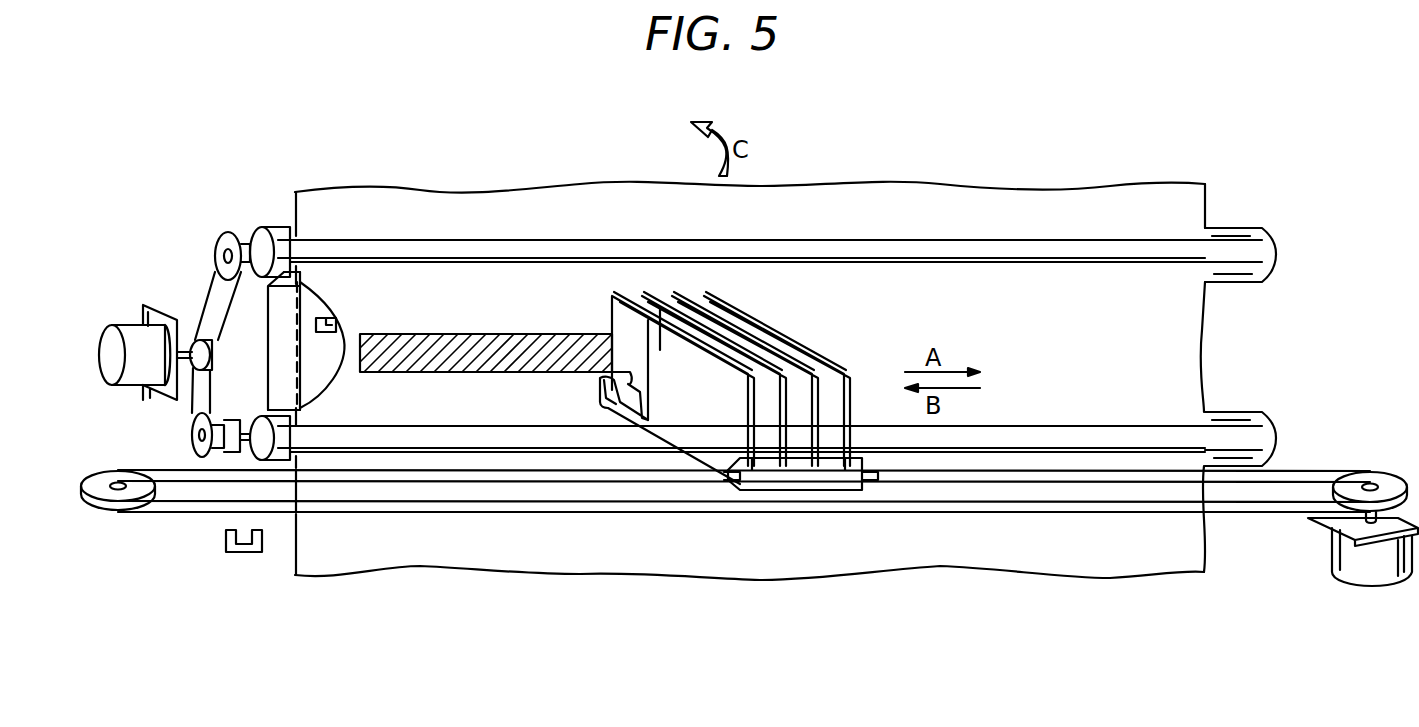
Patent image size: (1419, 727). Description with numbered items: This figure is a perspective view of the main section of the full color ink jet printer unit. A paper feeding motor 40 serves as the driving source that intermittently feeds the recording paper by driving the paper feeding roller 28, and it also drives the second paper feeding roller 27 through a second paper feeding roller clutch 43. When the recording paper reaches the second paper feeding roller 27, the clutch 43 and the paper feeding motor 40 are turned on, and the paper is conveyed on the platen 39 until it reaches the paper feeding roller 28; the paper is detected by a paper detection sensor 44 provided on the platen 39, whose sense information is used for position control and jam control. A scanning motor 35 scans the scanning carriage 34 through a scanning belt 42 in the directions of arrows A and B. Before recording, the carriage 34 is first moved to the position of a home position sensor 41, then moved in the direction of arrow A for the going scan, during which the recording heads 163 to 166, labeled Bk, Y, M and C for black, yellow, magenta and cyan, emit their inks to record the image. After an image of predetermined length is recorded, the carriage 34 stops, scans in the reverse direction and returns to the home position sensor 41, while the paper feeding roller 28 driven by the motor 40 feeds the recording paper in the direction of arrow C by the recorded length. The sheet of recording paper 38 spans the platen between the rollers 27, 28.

The second paper feeding roller 27 is at (1242, 430).
The paper feeding roller 28 is at (1236, 248).
The scanning carriage 34 is at (767, 456).
The scanning motor 35 is at (1344, 562).
The platen / recording sheet 38 is at (1082, 196).
The platen 39 is at (268, 318).
The paper feeding motor 40 is at (130, 324).
The home position sensor 41 is at (244, 554).
The scanning belt 42 is at (1012, 512).
The second paper feeding roller clutch 43 is at (192, 438).
The paper detection sensor 44 is at (330, 320).
The recording head 163 is at (773, 373).
The recording head 166 is at (788, 348).
The black head Bk is at (610, 294).
The yellow head Y is at (644, 294).
The magenta head M is at (676, 294).
The cyan head C is at (708, 294).